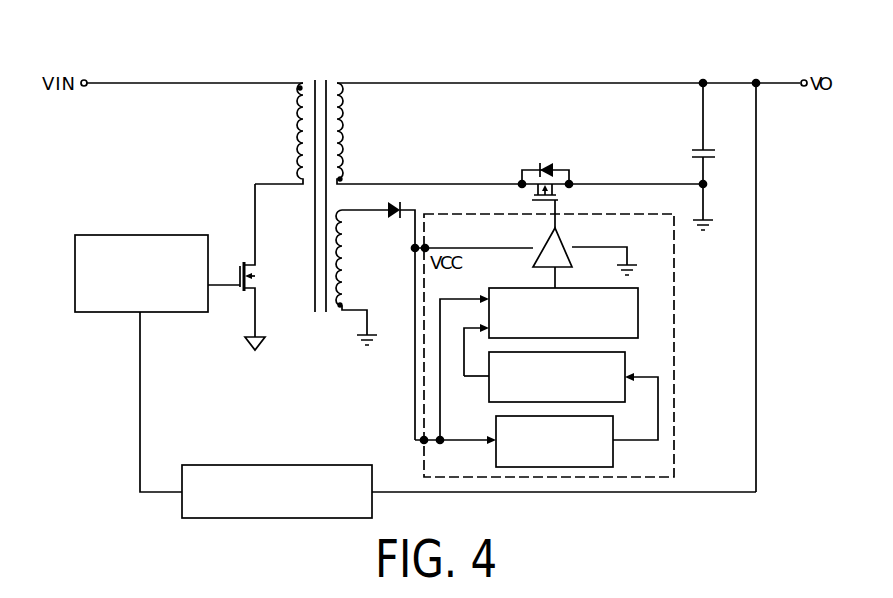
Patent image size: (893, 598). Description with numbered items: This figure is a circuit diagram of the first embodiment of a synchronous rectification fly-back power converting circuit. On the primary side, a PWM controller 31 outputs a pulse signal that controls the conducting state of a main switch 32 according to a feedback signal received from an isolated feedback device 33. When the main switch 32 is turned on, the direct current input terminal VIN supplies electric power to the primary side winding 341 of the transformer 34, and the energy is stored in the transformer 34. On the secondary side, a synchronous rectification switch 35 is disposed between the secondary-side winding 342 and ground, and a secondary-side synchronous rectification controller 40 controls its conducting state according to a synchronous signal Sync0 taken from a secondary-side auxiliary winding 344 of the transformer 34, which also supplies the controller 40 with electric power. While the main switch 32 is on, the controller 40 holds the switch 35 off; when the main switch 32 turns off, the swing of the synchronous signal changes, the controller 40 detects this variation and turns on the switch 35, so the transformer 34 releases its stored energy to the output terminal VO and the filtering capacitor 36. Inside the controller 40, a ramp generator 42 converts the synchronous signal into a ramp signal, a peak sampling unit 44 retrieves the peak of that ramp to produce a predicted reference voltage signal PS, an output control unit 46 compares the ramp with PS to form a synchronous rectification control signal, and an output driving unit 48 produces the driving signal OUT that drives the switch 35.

The PWM controller 31 is at (140, 233).
The main switch 32 is at (239, 243).
The isolated feedback device 33 is at (273, 465).
The transformer 34 is at (449, 176).
The primary side winding 341 is at (288, 140).
The secondary-side winding 342 is at (352, 121).
The secondary-side auxiliary winding 344 is at (355, 247).
The synchronous rectification switch 35 is at (565, 148).
The filtering capacitor 36 is at (724, 152).
The secondary-side synchronous rectification controller 40 is at (578, 367).
The ramp generator 42 is at (555, 467).
The peak sampling unit 44 is at (625, 360).
The output control unit 46 is at (638, 310).
The output driving unit 48 is at (538, 232).